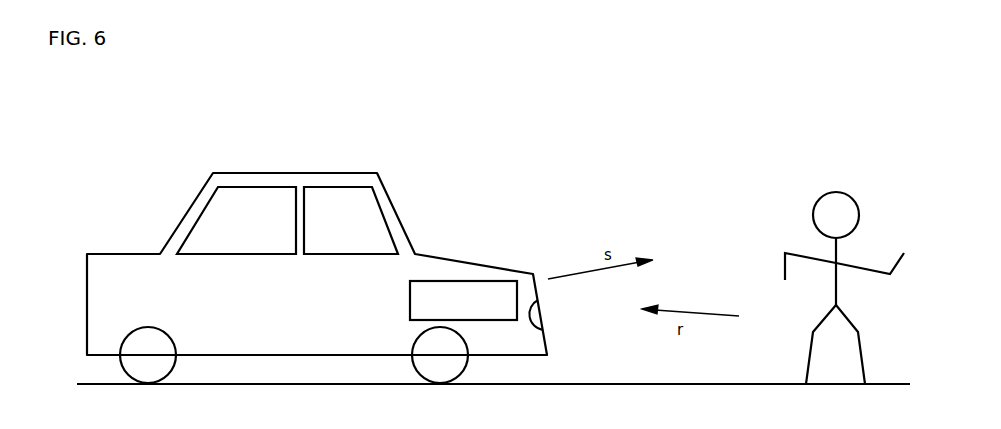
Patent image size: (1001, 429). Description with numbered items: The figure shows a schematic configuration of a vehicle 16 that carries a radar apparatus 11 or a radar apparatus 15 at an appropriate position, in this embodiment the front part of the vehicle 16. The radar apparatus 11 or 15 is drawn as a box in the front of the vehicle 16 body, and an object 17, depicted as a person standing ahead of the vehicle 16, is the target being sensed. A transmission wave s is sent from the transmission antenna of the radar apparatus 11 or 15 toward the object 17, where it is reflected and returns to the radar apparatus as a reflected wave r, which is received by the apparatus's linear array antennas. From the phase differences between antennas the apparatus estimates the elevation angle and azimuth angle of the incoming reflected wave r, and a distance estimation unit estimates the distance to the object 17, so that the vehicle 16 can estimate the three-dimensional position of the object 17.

The vehicle 16 is at (303, 173).
The radar apparatus 11 is at (419, 300).
The radar apparatus 15 is at (410, 290).
The object 17 is at (836, 192).